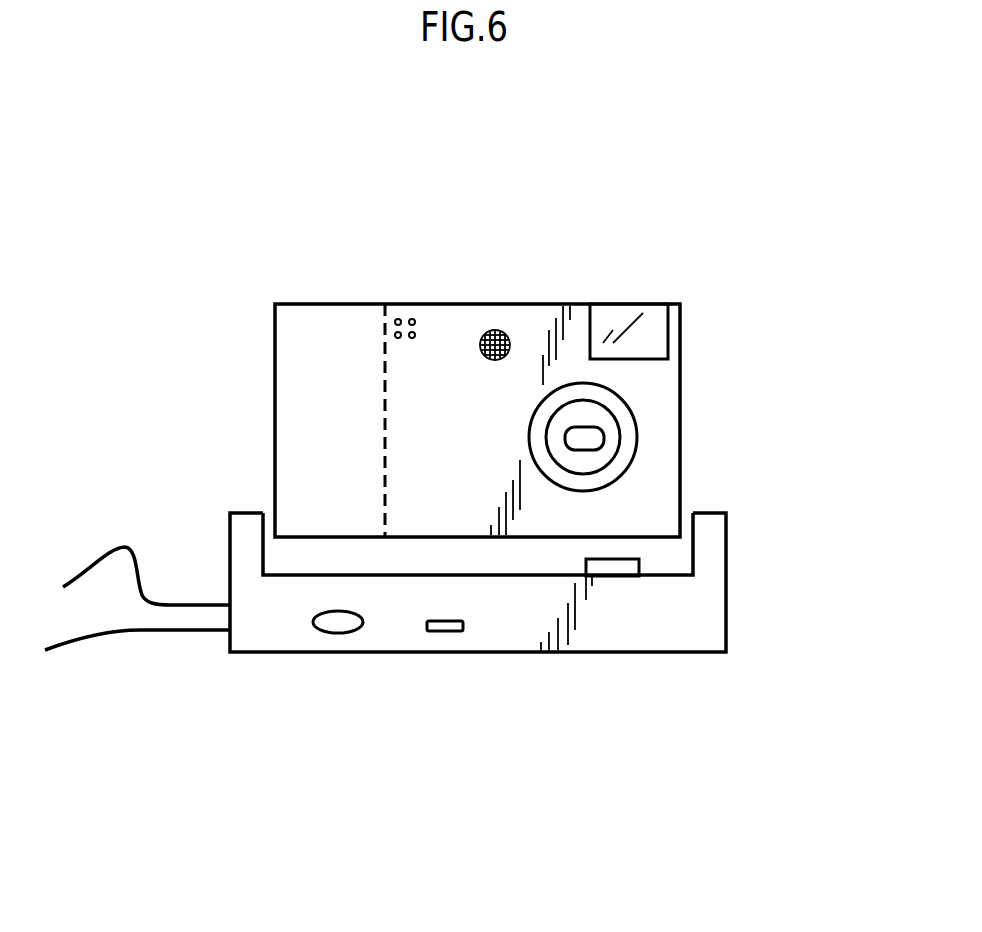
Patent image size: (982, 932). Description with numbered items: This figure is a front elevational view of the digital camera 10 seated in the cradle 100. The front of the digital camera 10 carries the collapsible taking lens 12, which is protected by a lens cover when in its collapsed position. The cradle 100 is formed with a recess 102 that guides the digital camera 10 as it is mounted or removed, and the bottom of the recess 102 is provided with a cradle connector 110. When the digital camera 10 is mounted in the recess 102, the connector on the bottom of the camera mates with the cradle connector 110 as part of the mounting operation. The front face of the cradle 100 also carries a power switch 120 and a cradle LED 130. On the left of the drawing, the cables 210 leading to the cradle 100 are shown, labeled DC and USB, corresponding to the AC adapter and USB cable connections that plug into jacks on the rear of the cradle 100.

The digital camera 10 is at (684, 257).
The taking lens 12 is at (578, 437).
The cradle 100 is at (592, 656).
The recess 102 is at (683, 554).
The cradle connector 110 is at (640, 568).
The power switch 120 is at (341, 625).
The cradle LED 130 is at (445, 632).
The cables (DC / USB) 210 is at (187, 632).